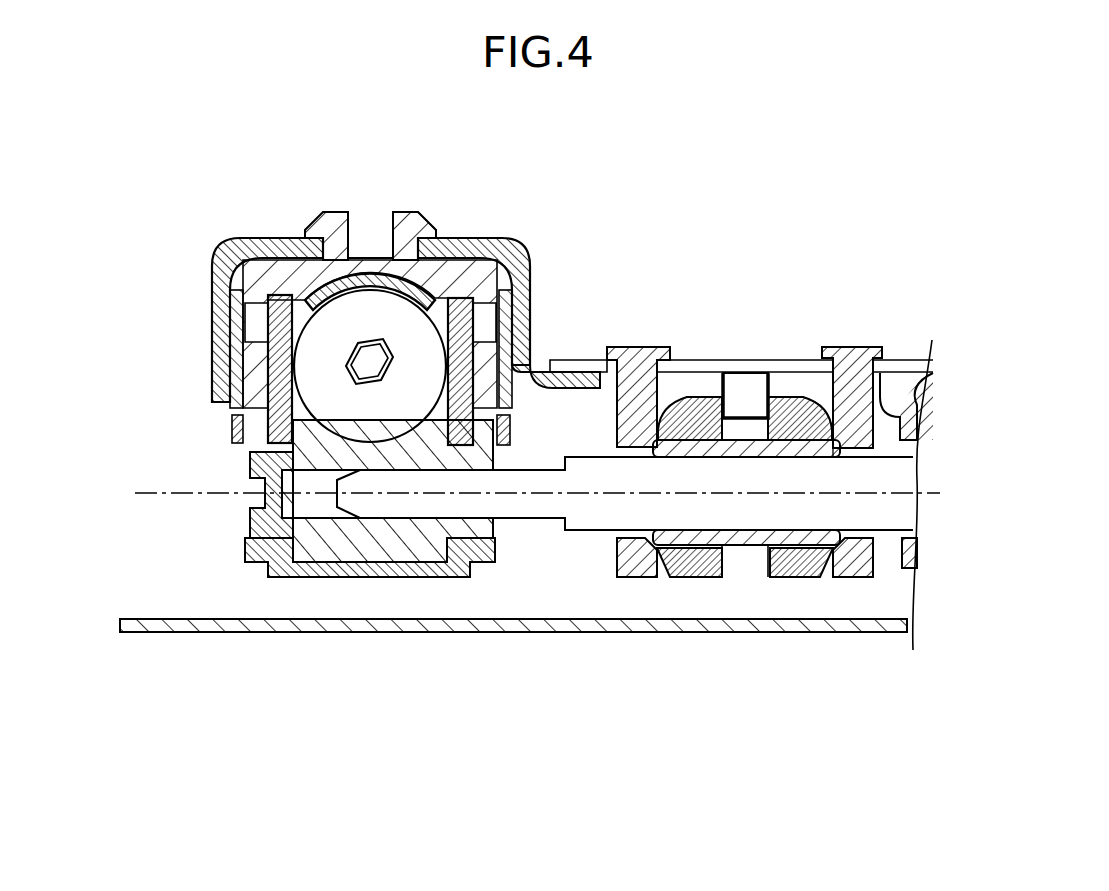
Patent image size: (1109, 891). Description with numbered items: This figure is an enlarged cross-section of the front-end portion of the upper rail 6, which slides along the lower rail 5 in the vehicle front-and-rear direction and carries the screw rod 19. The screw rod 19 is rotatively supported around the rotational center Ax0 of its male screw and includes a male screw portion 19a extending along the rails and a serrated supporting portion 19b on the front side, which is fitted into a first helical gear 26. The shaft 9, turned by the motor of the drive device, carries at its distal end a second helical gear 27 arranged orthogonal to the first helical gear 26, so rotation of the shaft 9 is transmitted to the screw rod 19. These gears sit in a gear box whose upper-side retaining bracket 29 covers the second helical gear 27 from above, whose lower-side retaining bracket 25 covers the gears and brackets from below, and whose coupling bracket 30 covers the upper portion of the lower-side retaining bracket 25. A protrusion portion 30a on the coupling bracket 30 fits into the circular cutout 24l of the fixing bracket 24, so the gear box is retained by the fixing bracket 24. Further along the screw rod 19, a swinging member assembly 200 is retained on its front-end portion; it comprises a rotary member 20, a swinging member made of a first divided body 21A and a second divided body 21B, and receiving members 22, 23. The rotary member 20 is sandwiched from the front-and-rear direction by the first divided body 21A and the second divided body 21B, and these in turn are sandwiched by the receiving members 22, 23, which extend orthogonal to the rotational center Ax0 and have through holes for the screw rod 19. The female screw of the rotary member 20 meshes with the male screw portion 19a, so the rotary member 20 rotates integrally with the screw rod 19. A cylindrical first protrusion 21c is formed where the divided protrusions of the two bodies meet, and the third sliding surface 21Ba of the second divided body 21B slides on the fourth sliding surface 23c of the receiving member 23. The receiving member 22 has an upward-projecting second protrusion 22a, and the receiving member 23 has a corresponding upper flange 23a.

The fixing bracket 24 is at (248, 238).
The shaft 9 is at (372, 360).
The cutout 24l is at (408, 249).
The protrusion portion 30a is at (407, 220).
The second helical gear 27 is at (467, 240).
The coupling bracket 30 is at (240, 282).
The upper-side retaining bracket 29 is at (262, 357).
The upper rail 6 is at (572, 366).
The second protrusion 22a is at (640, 347).
The first protrusion 21c is at (738, 385).
The second divided body 21B is at (787, 412).
The third sliding surface 21Ba is at (813, 417).
The upper flange of second support 23a is at (857, 347).
The fourth sliding surface 23c is at (834, 446).
The screw rod 19 is at (878, 511).
The male screw portion 19a is at (590, 512).
The supporting portion 19b is at (415, 505).
The lower-side retaining bracket 25 is at (262, 547).
The first helical gear 26 is at (360, 550).
The lower rail 5 is at (523, 632).
The receiving member 22 is at (637, 562).
The first divided body 21A is at (693, 563).
The rotary member 20 is at (743, 552).
The receiving member 23 is at (853, 560).
The swinging member assembly 200 is at (796, 511).
The rotational center Ax0 is at (178, 456).